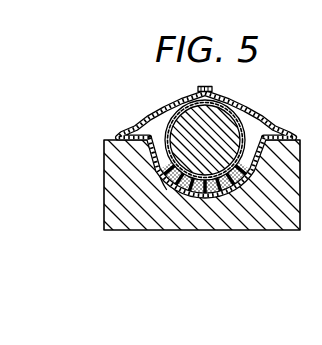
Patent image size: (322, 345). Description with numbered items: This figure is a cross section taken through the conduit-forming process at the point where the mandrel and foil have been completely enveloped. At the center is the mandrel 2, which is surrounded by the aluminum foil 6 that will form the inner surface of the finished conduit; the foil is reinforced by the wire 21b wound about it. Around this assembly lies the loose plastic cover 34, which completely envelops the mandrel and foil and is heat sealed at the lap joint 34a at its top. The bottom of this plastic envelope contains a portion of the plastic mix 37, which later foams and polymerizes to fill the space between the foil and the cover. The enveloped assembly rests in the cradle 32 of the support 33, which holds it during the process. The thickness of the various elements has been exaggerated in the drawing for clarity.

The mandrel 2 is at (243, 127).
The aluminum foil 6 is at (227, 129).
The wire 21b is at (172, 120).
The cradle 32 is at (223, 188).
The support 33 is at (128, 222).
The plastic cover 34 is at (150, 108).
The lap joint 34a is at (212, 89).
The plastic mix 37 is at (171, 186).